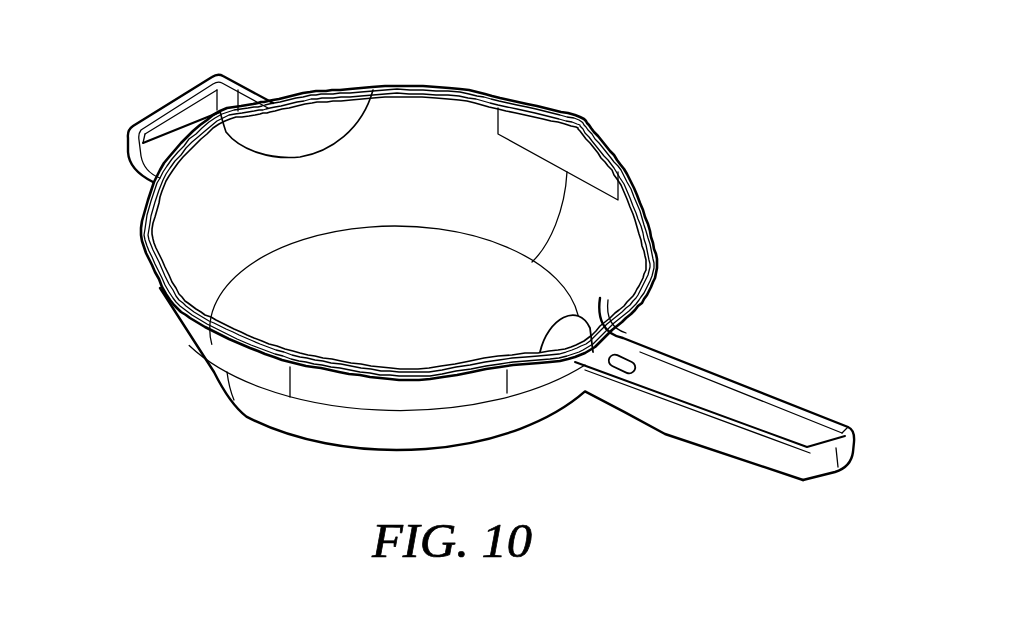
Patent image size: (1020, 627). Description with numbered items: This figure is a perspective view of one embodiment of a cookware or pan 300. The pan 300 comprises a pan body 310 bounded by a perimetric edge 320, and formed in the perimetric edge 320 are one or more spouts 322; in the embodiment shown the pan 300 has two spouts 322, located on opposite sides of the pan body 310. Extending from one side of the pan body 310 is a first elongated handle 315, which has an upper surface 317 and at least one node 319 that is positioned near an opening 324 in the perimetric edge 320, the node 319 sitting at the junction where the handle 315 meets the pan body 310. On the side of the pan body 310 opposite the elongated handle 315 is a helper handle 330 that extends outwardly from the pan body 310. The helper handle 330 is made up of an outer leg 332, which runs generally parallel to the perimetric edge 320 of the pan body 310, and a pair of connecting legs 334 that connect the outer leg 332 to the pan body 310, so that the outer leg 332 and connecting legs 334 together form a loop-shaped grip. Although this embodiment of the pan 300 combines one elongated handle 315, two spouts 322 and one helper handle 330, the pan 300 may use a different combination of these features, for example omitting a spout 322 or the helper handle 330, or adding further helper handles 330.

The cookware 300 is at (678, 149).
The pan body 310 is at (258, 399).
The first elongated handle 315 is at (763, 447).
The upper surface 317 is at (768, 415).
The node 319 is at (637, 370).
The perimetric edge 320 is at (373, 90).
The spout 322 is at (585, 124).
The opening 324 is at (540, 352).
The helper handle 330 is at (190, 91).
The outer leg 332 is at (165, 128).
The connecting legs 334 is at (258, 102).